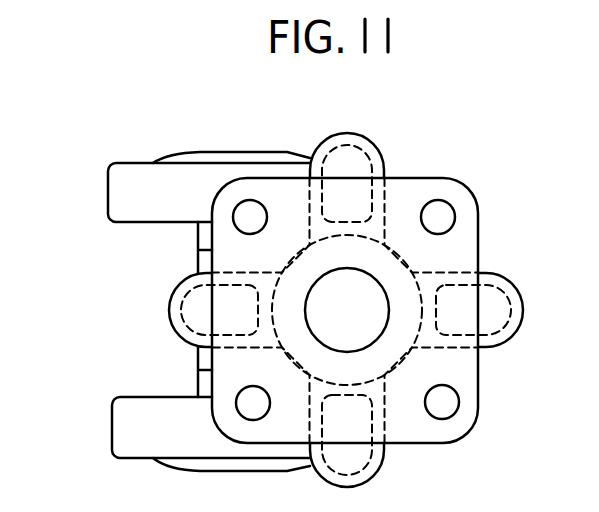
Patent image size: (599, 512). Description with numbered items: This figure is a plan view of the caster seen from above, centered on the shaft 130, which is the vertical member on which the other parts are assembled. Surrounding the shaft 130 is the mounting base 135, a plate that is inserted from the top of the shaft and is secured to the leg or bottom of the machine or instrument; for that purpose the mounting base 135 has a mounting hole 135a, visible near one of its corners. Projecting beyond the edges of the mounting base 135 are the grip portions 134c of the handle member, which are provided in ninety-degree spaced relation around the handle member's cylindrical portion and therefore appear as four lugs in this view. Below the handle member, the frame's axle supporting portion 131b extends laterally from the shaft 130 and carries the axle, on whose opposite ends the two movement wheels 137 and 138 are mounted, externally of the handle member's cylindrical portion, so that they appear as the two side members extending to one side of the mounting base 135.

The shaft 130 is at (362, 323).
The axle supporting portion 131b is at (198, 262).
The grip portion 134c is at (366, 141).
The mounting base 135 is at (474, 200).
The mounting hole 135a is at (440, 214).
The wheel 137 is at (120, 191).
The wheel 138 is at (122, 428).